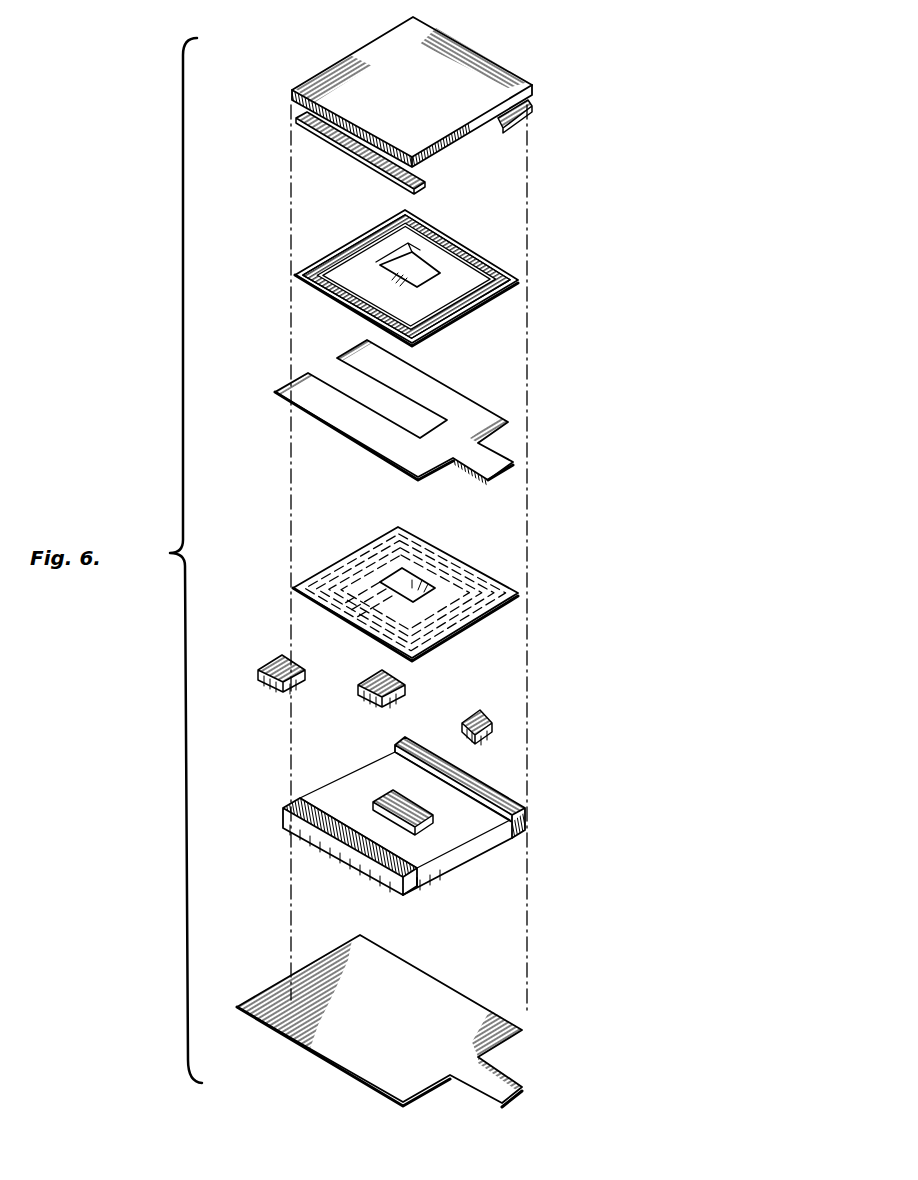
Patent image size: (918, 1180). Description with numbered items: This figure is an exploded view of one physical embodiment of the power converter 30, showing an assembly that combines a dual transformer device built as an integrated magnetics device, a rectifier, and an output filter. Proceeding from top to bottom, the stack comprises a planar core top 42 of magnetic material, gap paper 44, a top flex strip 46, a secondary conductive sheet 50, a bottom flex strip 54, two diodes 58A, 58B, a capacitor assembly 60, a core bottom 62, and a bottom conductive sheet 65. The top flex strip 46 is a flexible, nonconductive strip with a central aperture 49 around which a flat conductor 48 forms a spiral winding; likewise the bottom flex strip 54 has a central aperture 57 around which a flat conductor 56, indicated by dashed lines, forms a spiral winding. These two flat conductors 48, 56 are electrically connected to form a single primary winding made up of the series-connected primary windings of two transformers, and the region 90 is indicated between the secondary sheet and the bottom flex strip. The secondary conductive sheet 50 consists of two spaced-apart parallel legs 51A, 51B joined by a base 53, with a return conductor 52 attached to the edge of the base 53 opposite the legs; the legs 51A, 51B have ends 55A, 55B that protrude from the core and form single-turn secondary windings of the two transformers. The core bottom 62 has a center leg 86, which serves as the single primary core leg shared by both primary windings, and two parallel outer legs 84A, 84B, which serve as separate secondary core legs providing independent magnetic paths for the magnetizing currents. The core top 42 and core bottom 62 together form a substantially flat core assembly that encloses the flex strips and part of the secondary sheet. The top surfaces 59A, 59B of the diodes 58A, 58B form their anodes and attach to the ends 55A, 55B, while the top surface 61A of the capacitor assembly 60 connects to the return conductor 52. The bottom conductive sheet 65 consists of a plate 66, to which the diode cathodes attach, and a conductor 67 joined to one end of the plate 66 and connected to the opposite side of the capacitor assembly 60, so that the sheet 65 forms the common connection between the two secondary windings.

The power converter 30 is at (637, 77).
The core top 42 is at (340, 72).
The gap paper 44 is at (302, 125).
The top flex strip 46 is at (435, 262).
The flat conductor 48 is at (363, 240).
The central aperture 49 is at (410, 270).
The secondary conductive sheet 50 is at (413, 399).
The leg 51A is at (338, 412).
The leg 51B is at (400, 375).
The return conductor 52 is at (500, 457).
The base 53 is at (480, 427).
The end 55A is at (290, 382).
The end 55B is at (345, 350).
The sensing region 90 is at (423, 492).
The bottom flex strip 54 is at (443, 593).
The flat conductor 56 is at (487, 605).
The central aperture 57 is at (415, 587).
The diode 58A is at (268, 665).
The diode 58B is at (363, 678).
The top surface 59A is at (270, 683).
The top surface 59B is at (372, 695).
The capacitor assembly 60 is at (487, 713).
The top surface 61A is at (480, 710).
The core bottom 62 is at (442, 826).
The outer leg 84A is at (348, 843).
The outer leg 84B is at (483, 788).
The center leg 86 is at (430, 817).
The bottom conductive sheet 65 is at (408, 1021).
The plate 66 is at (297, 997).
The conductor 67 is at (512, 1085).